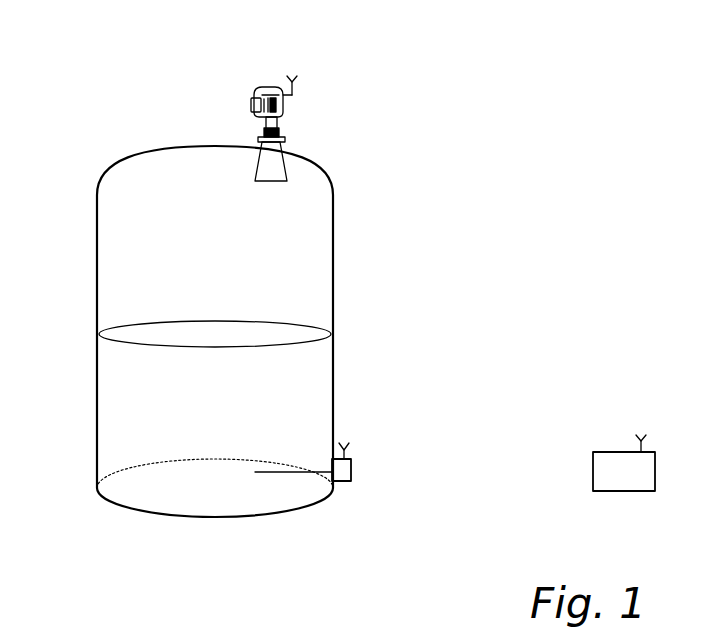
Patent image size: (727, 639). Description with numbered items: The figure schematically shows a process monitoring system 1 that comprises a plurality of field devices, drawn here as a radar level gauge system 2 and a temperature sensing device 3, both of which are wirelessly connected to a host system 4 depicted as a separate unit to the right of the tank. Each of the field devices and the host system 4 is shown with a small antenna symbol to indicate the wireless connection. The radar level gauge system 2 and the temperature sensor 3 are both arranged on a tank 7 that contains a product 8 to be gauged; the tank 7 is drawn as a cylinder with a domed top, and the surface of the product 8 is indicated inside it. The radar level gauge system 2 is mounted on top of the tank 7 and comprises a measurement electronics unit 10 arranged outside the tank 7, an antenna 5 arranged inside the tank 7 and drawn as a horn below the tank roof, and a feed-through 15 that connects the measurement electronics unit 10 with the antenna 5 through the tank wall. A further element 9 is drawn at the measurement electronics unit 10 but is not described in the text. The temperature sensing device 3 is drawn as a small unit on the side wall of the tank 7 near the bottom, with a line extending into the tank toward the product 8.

The process monitoring system 1 is at (523, 210).
The radar level gauge system 2 is at (289, 99).
The temperature sensing device 3 is at (356, 430).
The host system 4 is at (620, 452).
The antenna 5 is at (288, 166).
The tank 7 is at (97, 272).
The product 8 is at (218, 444).
The wireless communication antenna 9 is at (294, 88).
The measurement electronics unit 10 is at (268, 88).
The feed-through 15 is at (284, 126).